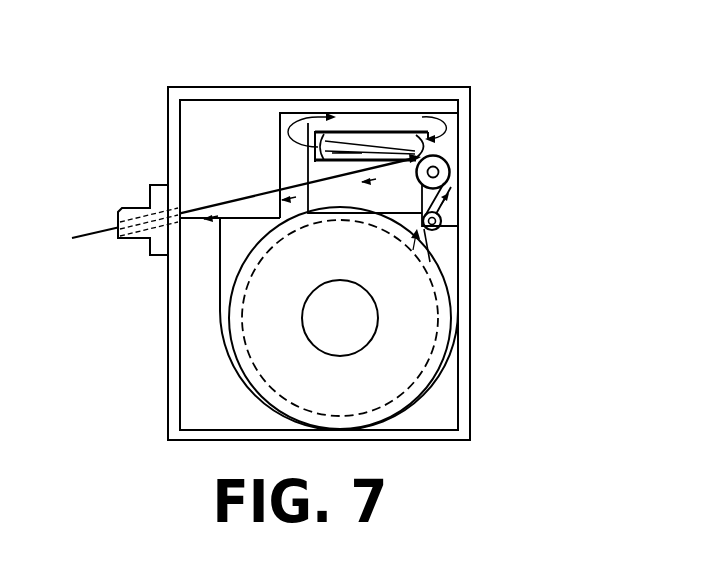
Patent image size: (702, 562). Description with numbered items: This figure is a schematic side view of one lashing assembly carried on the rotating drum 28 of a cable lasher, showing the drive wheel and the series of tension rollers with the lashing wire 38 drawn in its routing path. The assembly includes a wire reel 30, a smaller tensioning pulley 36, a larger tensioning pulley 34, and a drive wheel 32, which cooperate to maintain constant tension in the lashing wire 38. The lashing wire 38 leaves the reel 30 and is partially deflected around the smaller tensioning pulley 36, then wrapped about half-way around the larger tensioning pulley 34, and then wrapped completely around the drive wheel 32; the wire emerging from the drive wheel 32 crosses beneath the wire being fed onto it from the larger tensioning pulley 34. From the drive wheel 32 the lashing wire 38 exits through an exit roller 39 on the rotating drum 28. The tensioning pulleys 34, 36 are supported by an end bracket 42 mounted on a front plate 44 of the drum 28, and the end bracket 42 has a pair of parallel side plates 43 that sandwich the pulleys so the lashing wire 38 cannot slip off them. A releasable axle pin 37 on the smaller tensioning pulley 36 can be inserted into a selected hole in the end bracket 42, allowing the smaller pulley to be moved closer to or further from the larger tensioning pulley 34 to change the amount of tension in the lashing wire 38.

The rotating drum 28 is at (325, 78).
The wire reel 30 is at (418, 378).
The drive wheel 32 is at (400, 140).
The larger tensioning pulley 34 is at (451, 170).
The smaller tensioning pulley 36 is at (443, 223).
The releasable axle pin 37 is at (436, 229).
The lashing wire 38 is at (227, 202).
The exit roller 39 is at (132, 240).
The end bracket 42 is at (462, 207).
The parallel side plates 43 is at (452, 215).
The front plate 44 is at (463, 190).